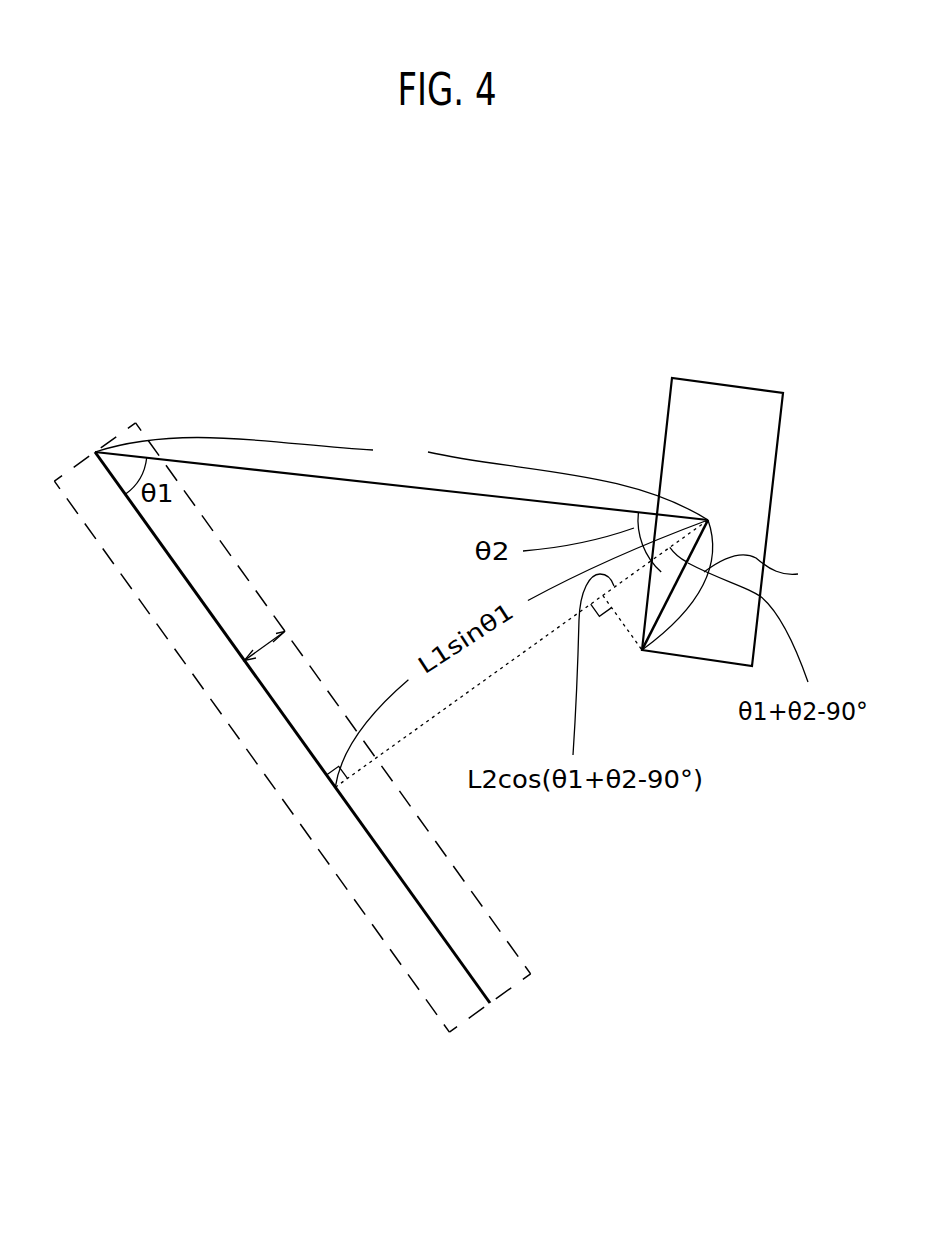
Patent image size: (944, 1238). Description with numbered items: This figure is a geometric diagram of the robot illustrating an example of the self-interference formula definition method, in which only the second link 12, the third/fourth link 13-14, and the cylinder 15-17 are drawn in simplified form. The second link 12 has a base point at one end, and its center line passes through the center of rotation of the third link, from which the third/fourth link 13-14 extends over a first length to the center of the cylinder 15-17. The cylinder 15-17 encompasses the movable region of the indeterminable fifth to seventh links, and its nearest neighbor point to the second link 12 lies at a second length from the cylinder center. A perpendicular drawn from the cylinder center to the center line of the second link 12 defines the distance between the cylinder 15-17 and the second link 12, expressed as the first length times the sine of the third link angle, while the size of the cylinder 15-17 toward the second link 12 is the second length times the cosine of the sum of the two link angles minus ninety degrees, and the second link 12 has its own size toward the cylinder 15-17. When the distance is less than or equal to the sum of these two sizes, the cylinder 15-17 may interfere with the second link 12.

The second link 12 is at (268, 697).
The third/fourth link 13-14 is at (263, 472).
The cylinder 15-17 is at (702, 382).